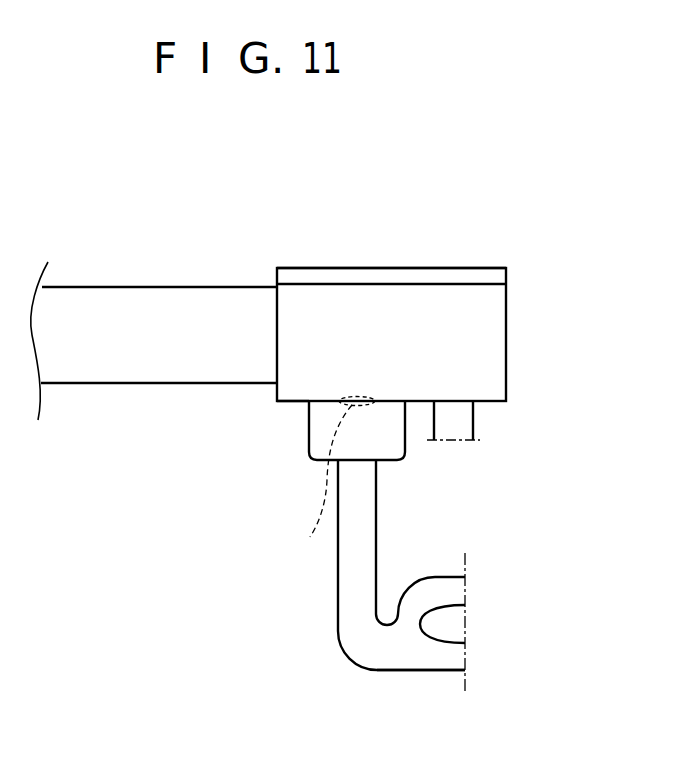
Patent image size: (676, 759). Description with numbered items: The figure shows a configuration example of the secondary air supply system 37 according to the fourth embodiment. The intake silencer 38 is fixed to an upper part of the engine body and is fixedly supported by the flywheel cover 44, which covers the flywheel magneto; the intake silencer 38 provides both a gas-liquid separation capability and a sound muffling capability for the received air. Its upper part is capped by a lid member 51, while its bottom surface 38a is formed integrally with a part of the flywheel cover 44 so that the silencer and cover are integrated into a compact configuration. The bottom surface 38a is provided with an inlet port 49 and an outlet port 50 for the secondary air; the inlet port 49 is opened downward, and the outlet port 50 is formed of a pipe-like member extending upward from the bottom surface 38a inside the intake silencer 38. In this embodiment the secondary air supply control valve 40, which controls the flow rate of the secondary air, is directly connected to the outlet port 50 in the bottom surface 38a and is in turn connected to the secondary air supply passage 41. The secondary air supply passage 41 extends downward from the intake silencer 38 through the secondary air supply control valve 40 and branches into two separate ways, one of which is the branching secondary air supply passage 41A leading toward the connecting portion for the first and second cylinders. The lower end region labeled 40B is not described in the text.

The flywheel cover 44 is at (142, 287).
The lid member 51 is at (353, 268).
The intake silencer 38 is at (338, 309).
The bottom surface 38a is at (287, 403).
The secondary air supply system 37 is at (257, 451).
The secondary air supply control valve 40 is at (309, 442).
The outlet port 50 is at (324, 478).
The inlet port 49 is at (473, 420).
The secondary air supply passage 41 is at (359, 606).
The branching secondary air supply passage 41A is at (442, 575).
The bottom end 40B is at (427, 672).